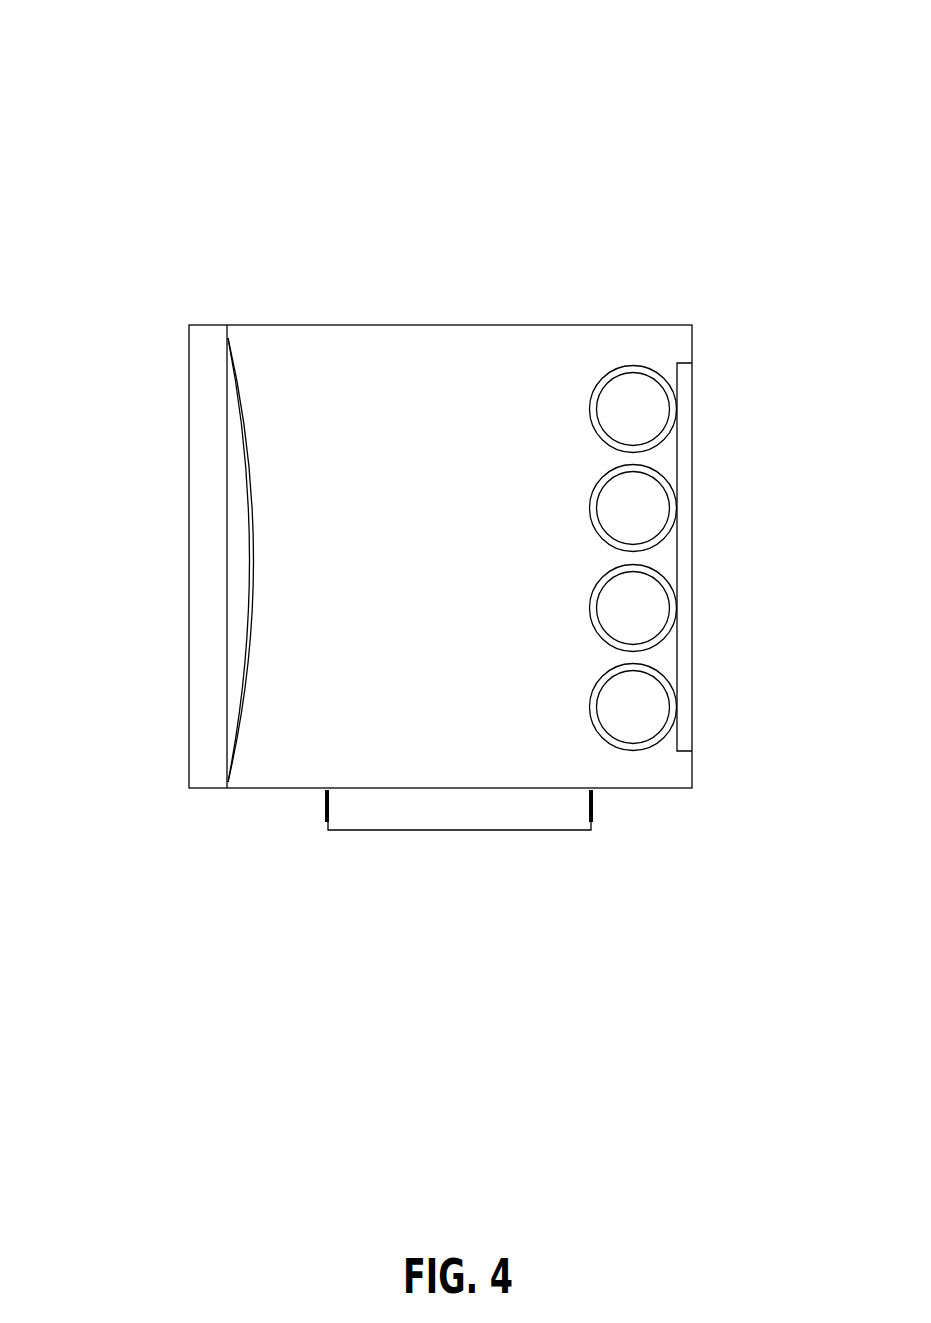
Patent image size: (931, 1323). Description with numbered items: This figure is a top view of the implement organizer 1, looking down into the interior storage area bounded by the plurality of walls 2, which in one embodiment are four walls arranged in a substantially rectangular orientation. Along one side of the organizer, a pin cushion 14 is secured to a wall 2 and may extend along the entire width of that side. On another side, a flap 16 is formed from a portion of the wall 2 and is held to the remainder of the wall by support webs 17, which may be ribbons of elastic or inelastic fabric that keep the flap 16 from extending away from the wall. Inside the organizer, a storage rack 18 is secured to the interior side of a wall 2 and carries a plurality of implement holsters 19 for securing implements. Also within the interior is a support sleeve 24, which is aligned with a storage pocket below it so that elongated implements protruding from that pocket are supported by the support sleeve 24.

The implement organizer 1 is at (99, 70).
The walls 2 is at (446, 554).
The pin cushion 14 is at (149, 536).
The flap 16 is at (445, 859).
The support webs 17 is at (510, 829).
The storage rack 18 is at (737, 557).
The implement holsters 19 is at (693, 558).
The support sleeve 24 is at (289, 560).